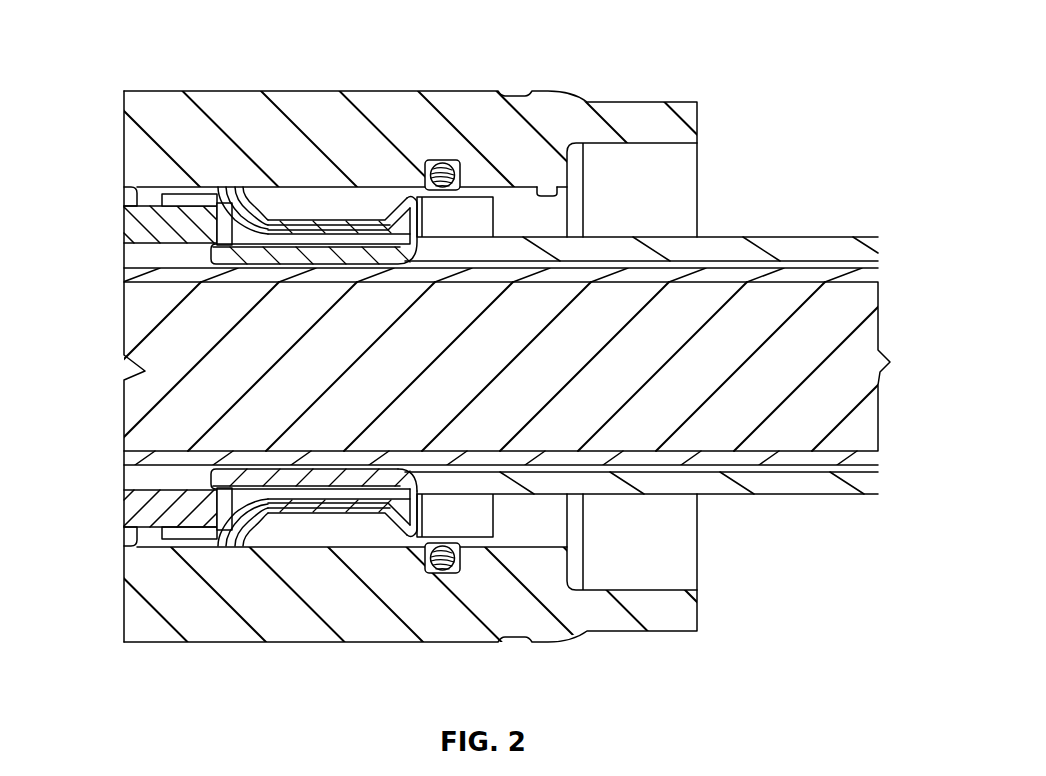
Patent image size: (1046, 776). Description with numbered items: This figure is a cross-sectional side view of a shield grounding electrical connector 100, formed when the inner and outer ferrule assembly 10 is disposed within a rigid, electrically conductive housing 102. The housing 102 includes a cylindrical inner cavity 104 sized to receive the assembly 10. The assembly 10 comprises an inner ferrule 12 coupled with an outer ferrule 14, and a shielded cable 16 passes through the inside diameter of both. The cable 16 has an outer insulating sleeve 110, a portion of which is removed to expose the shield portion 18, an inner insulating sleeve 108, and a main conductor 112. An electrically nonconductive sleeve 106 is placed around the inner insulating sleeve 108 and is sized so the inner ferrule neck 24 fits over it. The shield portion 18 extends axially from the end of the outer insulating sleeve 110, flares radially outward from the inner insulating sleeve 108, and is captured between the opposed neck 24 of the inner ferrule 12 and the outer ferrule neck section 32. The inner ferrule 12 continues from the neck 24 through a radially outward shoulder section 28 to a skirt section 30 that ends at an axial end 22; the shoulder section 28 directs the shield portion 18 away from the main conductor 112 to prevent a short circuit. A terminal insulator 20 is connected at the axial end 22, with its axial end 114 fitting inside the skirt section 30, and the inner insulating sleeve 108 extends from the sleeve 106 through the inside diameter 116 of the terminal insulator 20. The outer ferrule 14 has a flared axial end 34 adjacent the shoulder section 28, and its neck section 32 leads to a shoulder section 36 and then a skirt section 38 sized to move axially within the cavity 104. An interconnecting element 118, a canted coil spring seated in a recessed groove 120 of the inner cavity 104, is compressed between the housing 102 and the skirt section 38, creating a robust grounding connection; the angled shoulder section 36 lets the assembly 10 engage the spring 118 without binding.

The connector 100 is at (706, 68).
The housing 102 is at (331, 110).
The inner cavity 104 is at (557, 186).
The sleeve 106 is at (212, 475).
The inner insulating sleeve 108 is at (143, 458).
The outer insulating sleeve 110 is at (820, 488).
The main conductor 112 is at (863, 318).
The axial end 114 is at (186, 227).
The inside diameter 116 is at (196, 244).
The interconnecting element 118 is at (433, 577).
The recessed groove 120 is at (443, 160).
The inner and outer ferrule assembly 10 is at (340, 203).
The inner ferrule 12 is at (293, 497).
The outer ferrule 14 is at (358, 517).
The shielded cable 16 is at (812, 234).
The shield portion 18 is at (407, 524).
The terminal insulator 20 is at (139, 226).
The axial end 22 is at (150, 543).
The neck 24 is at (322, 494).
The shoulder section 28 is at (247, 520).
The skirt section 30 is at (192, 190).
The outer ferrule neck section 32 is at (303, 219).
The axial end 34 is at (242, 190).
The shoulder section 36 is at (393, 521).
The skirt section 38 is at (540, 188).